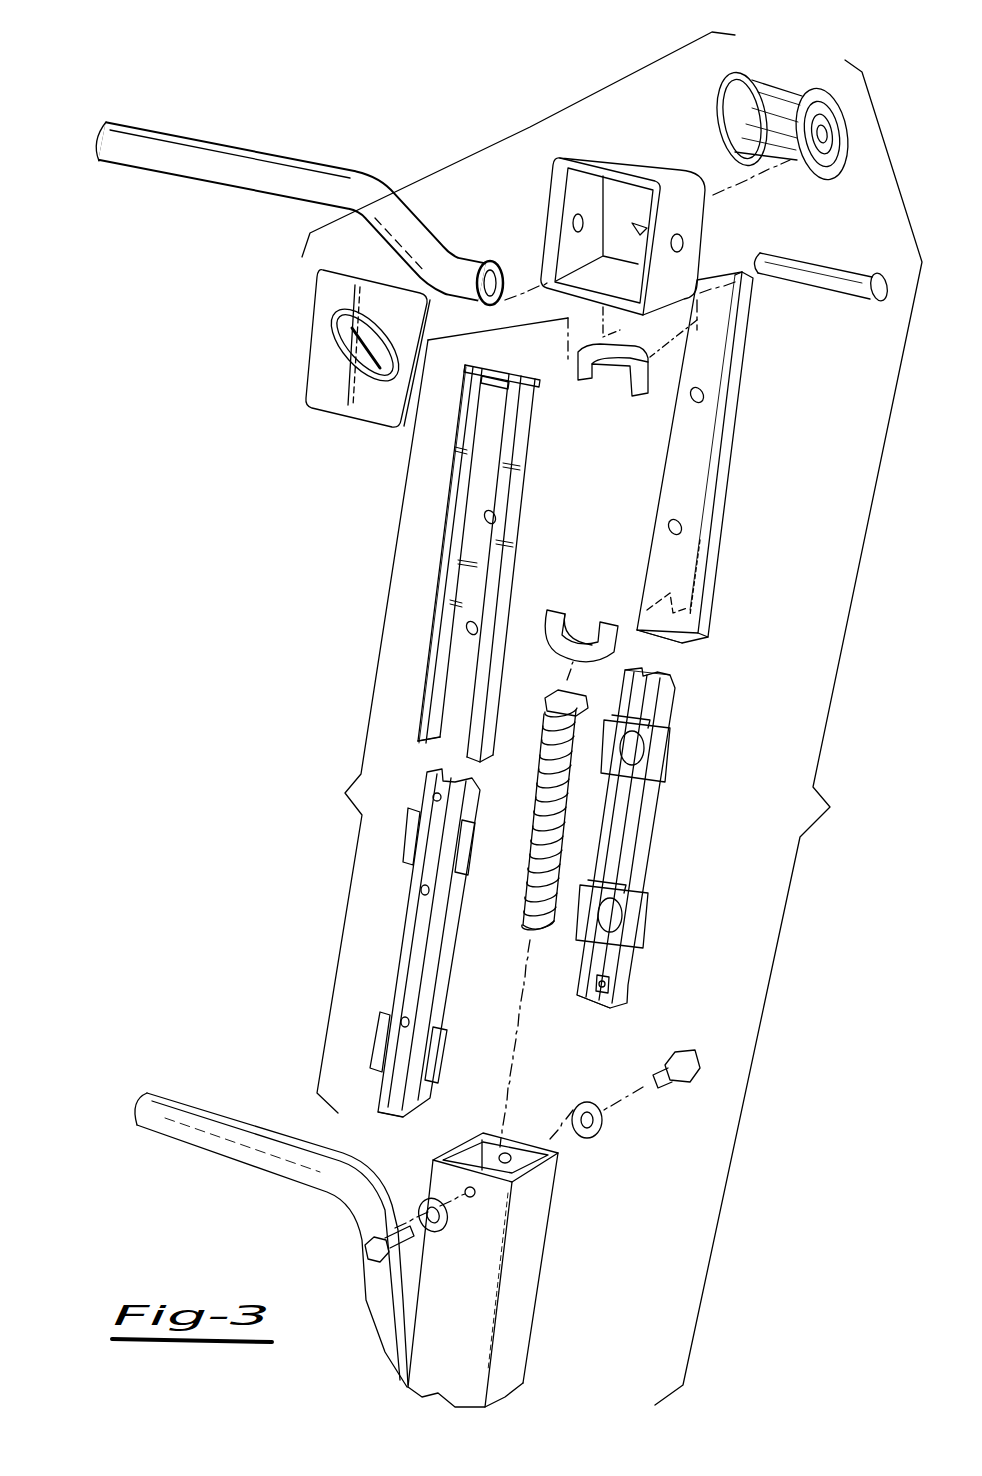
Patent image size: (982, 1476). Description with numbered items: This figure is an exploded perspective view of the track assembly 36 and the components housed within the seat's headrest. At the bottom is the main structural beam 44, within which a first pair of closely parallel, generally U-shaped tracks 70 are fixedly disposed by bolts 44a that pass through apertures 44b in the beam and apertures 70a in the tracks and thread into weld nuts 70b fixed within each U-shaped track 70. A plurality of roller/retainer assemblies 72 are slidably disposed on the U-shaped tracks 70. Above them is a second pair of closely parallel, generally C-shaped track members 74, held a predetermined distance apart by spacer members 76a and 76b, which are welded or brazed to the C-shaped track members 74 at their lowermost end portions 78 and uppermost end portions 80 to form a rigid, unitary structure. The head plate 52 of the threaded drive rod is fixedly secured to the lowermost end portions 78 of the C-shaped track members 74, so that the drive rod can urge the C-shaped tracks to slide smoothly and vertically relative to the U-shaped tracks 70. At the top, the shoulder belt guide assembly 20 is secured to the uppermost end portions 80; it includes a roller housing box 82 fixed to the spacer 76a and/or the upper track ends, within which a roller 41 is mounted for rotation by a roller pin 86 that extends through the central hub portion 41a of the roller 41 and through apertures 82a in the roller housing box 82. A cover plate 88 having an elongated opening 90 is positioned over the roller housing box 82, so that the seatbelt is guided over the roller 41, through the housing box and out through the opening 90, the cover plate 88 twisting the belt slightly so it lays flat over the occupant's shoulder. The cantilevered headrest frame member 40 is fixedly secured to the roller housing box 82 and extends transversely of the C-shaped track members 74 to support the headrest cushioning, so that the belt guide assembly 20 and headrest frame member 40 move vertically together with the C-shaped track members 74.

The shoulder belt guide assembly 20 is at (518, 144).
The track assembly 36 is at (615, 732).
The headrest frame member 40 is at (173, 160).
The roller 41 is at (782, 114).
The central hub portion 41a is at (830, 138).
The main structural beam 44 is at (535, 1270).
The bolts 44a is at (700, 1090).
The apertures 44b is at (515, 1187).
The head plate 52 is at (545, 710).
The U-shaped tracks 70 is at (566, 909).
The apertures 70a is at (388, 1112).
The weld nuts 70b is at (670, 673).
The roller/retainer assemblies 72 is at (412, 836).
The C-shaped track members 74 is at (720, 457).
The spacer member 76a is at (637, 398).
The spacer member 76b is at (582, 630).
The lowermost end portions 78 is at (707, 623).
The uppermost end portions 80 is at (720, 328).
The roller housing box 82 is at (642, 201).
The apertures 82a is at (573, 226).
The roller pin 86 is at (815, 275).
The cover plate 88 is at (326, 368).
The elongated opening 90 is at (345, 345).